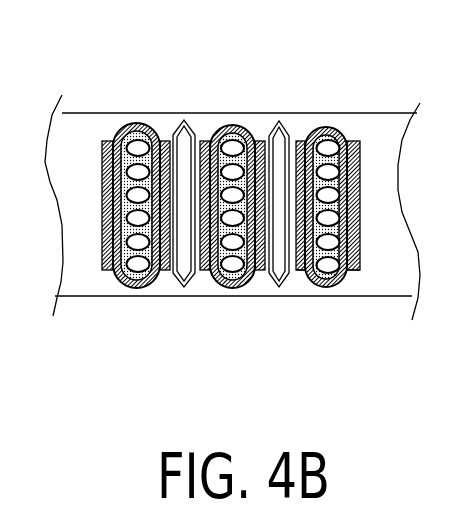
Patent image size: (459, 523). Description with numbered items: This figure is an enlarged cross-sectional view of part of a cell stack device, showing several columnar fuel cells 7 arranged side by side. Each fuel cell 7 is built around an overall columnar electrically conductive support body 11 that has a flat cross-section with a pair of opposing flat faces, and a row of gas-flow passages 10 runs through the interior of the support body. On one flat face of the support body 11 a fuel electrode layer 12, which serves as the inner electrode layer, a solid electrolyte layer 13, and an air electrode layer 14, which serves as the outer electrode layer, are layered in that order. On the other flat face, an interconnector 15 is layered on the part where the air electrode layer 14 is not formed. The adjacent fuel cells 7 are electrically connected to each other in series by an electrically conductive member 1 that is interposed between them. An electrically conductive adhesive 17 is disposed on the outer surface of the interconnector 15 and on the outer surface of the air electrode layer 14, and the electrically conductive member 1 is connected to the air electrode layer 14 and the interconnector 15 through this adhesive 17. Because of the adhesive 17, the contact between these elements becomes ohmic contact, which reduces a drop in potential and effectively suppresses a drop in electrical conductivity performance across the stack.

The electrically conductive member 1 is at (276, 124).
The fuel cell 7 is at (295, 224).
The gas-flow passage 10 is at (306, 287).
The electrically conductive support body 11 is at (318, 279).
The fuel electrode layer 12 is at (335, 284).
The solid electrolyte layer 13 is at (329, 268).
The air electrode layer 14 is at (291, 144).
The interconnector 15 is at (376, 155).
The electrically conductive adhesive 17 is at (296, 264).